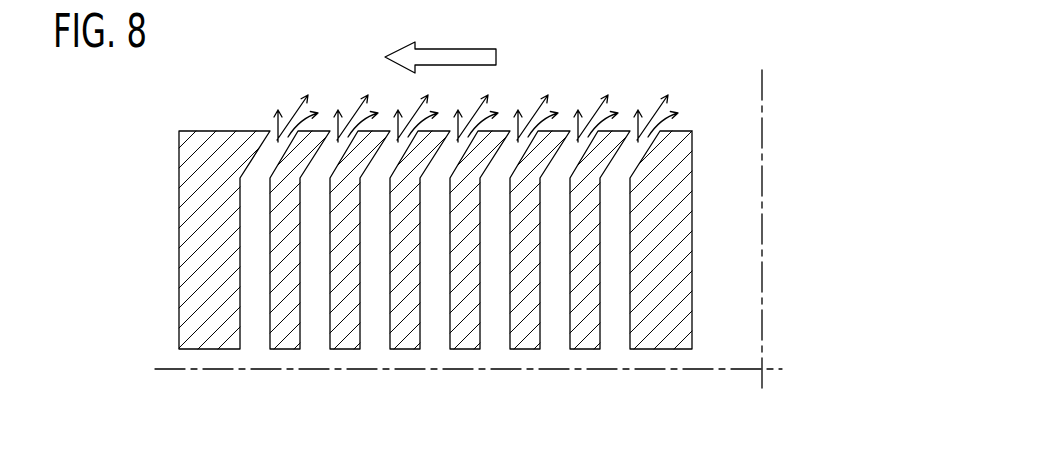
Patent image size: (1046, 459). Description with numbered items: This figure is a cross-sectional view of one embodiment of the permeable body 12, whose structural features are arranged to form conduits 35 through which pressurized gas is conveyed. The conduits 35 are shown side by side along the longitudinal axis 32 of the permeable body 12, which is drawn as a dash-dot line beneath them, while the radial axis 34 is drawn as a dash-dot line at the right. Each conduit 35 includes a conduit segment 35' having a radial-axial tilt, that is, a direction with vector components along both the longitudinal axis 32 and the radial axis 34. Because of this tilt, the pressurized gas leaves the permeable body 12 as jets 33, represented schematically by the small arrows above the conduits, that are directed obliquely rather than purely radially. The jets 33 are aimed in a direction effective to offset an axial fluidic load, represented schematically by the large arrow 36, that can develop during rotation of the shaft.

The permeable body 12 is at (464, 211).
The longitudinal axis 32 is at (413, 370).
The jets 33 is at (302, 110).
The radial axis 34 is at (762, 263).
The conduits 35 is at (464, 272).
The conduit segment 35' is at (690, 240).
The arrow 36 is at (455, 47).